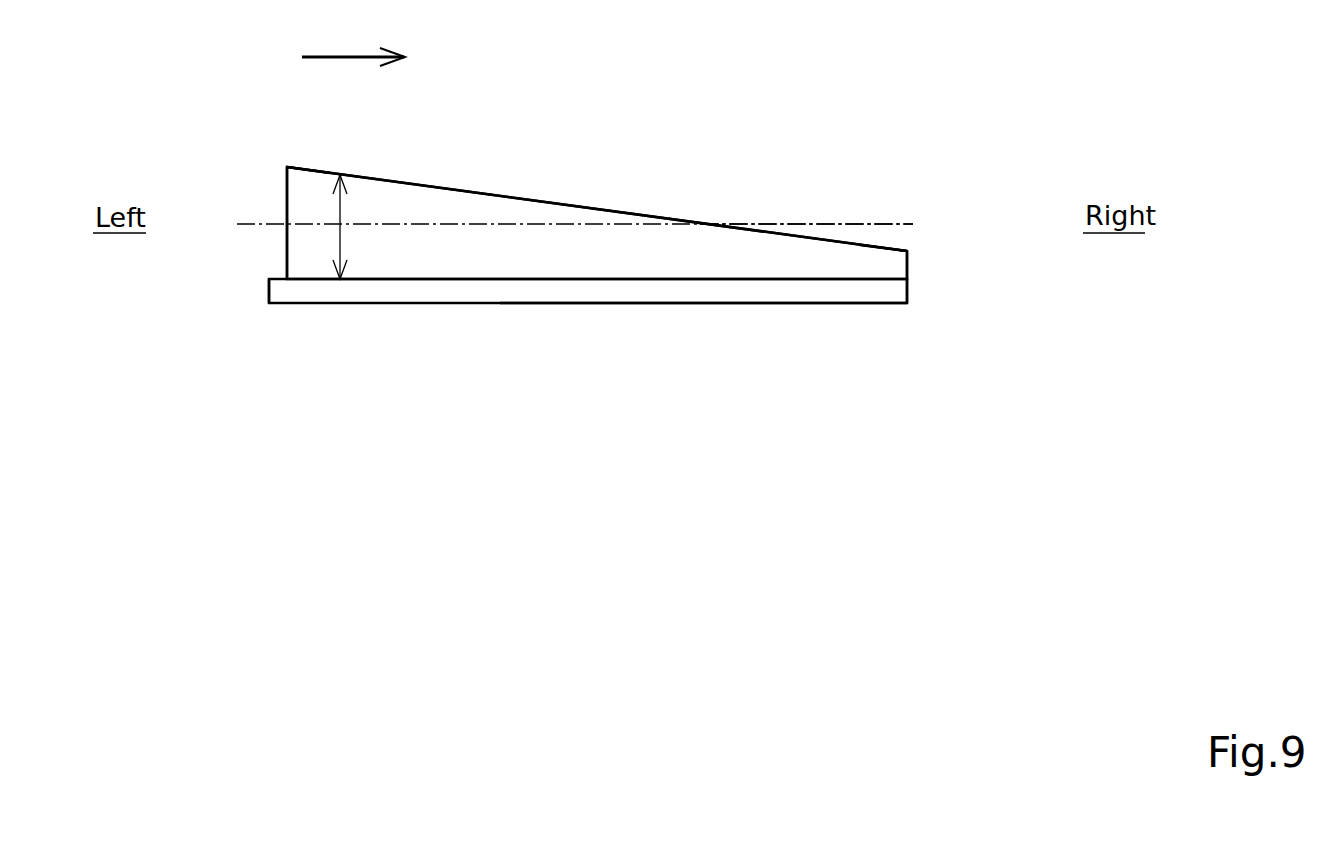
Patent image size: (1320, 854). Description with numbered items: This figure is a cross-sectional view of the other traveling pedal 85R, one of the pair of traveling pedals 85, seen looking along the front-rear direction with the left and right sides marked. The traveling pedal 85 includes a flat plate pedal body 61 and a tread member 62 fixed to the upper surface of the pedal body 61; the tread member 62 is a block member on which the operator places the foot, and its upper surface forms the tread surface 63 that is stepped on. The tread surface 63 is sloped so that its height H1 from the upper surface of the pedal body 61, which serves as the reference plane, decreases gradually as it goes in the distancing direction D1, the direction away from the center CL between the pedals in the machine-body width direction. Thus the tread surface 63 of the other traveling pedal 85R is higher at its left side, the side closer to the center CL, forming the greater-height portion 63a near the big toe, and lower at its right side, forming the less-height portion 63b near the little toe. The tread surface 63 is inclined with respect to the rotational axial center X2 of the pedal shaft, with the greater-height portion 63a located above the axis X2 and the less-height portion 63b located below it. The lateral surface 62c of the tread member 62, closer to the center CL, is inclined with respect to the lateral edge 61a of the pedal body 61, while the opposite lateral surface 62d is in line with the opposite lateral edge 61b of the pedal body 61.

The pedal body 61 is at (422, 294).
The lateral edge 61a is at (269, 292).
The opposite lateral edge 61b is at (908, 292).
The tread member 62 is at (442, 160).
The lateral surface 62c is at (287, 192).
The opposite lateral surface 62d is at (908, 260).
The tread surface 63 is at (528, 200).
The greater-height portion 63a is at (310, 180).
The less-height portion 63b is at (872, 259).
The traveling pedal 85 is at (795, 318).
The other traveling pedal 85R is at (628, 332).
The height H1 is at (341, 240).
The axis of the pedal shaft X2 is at (843, 220).
The distancing direction D1 is at (358, 56).
The center between the pedals CL is at (159, 133).